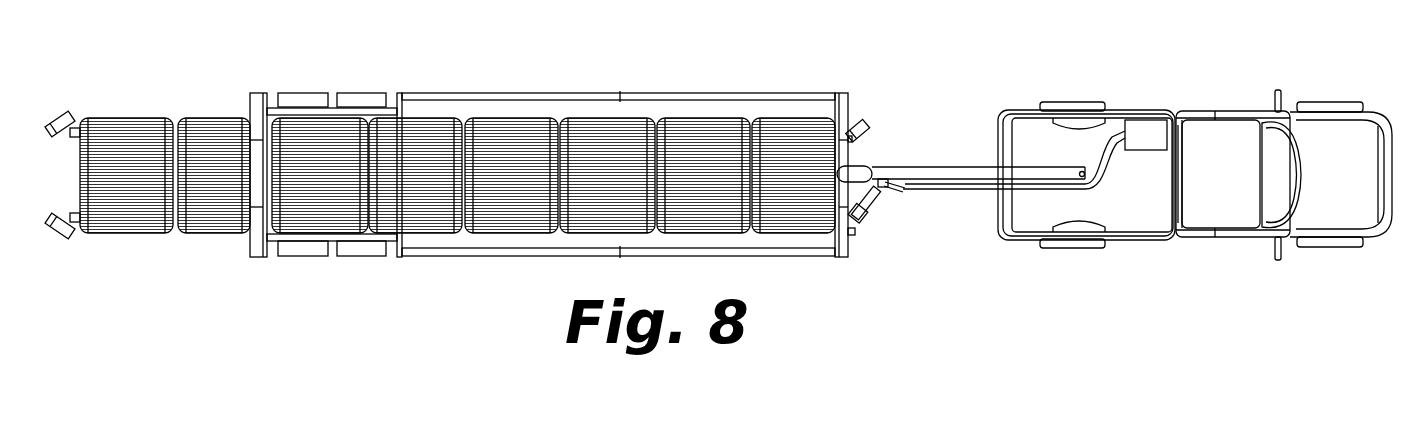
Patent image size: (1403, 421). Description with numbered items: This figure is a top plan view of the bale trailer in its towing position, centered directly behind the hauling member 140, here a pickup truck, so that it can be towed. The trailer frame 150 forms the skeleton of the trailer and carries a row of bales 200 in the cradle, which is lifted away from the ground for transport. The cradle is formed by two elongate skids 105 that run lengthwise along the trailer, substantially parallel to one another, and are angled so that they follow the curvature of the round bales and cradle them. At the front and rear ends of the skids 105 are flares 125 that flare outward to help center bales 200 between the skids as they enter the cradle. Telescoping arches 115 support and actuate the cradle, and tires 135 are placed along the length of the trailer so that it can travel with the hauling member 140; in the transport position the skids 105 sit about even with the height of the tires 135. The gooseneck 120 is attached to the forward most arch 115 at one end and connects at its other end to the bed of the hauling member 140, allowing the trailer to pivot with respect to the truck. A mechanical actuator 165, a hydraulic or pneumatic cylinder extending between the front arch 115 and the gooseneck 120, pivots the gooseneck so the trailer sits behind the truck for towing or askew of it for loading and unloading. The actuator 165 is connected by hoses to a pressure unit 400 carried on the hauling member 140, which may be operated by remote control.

The skids 105 is at (74, 127).
The arches 115 is at (250, 107).
The gooseneck 120 is at (942, 174).
The flares 125 is at (48, 117).
The tires 135 is at (305, 100).
The hauling member 140 is at (1205, 183).
The trailer frame 150 is at (498, 97).
The mechanical actuator 165 is at (883, 240).
The bales 200 is at (496, 181).
The pressure unit 400 is at (1150, 134).